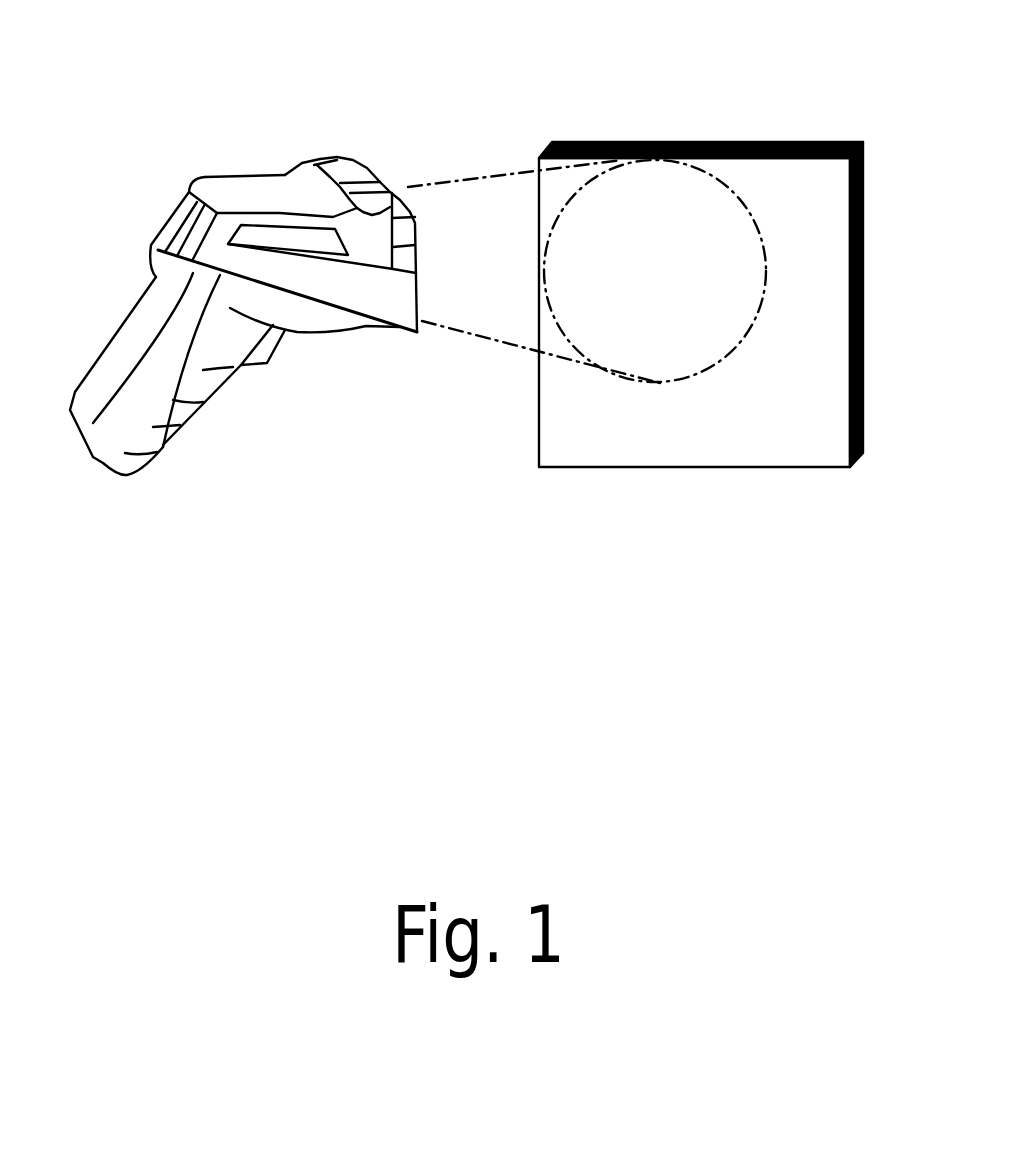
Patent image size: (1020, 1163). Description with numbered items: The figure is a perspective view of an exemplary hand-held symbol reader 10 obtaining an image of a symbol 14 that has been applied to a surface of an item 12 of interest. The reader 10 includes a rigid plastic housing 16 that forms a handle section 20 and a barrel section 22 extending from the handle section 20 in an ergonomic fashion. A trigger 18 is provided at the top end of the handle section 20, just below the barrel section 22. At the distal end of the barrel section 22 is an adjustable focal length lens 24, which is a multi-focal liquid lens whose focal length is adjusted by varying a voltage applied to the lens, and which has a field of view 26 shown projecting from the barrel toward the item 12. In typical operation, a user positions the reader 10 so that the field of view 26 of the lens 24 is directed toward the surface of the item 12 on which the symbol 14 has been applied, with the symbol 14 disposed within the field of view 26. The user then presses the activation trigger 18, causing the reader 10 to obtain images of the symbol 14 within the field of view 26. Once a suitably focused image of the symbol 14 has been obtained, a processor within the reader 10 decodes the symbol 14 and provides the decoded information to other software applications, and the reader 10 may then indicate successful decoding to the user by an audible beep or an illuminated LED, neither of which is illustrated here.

The hand-held symbol reader 10 is at (273, 73).
The item 12 is at (777, 178).
The symbol 14 is at (630, 203).
The rigid plastic housing 16 is at (167, 293).
The trigger 18 is at (272, 340).
The handle section 20 is at (143, 400).
The barrel section 22 is at (275, 189).
The adjustable focal length lens 24 is at (428, 240).
The field of view 26 is at (570, 198).